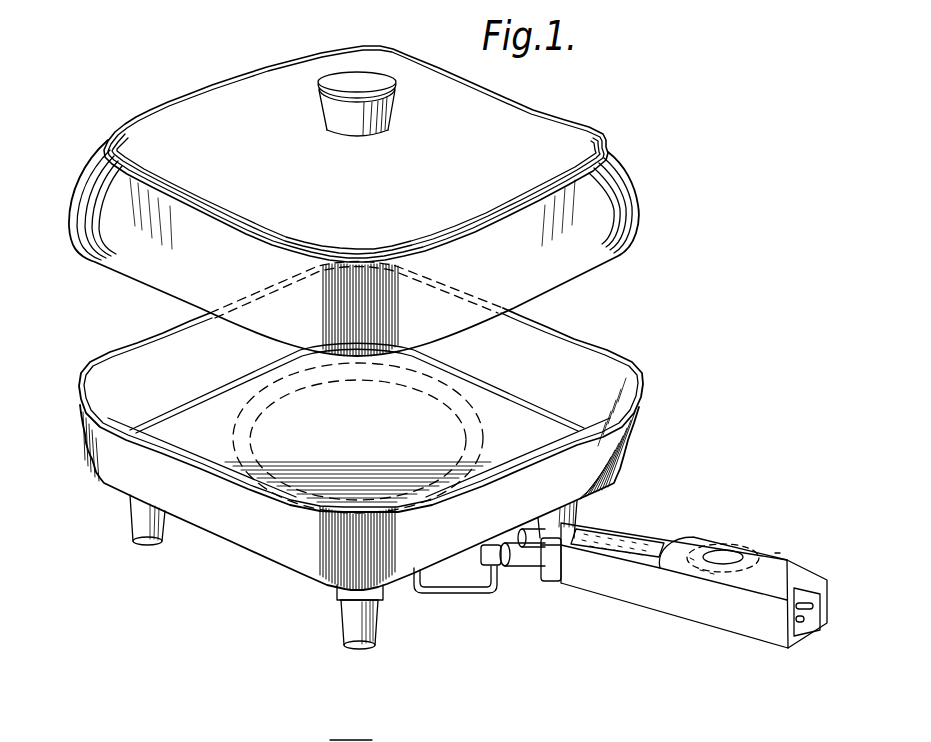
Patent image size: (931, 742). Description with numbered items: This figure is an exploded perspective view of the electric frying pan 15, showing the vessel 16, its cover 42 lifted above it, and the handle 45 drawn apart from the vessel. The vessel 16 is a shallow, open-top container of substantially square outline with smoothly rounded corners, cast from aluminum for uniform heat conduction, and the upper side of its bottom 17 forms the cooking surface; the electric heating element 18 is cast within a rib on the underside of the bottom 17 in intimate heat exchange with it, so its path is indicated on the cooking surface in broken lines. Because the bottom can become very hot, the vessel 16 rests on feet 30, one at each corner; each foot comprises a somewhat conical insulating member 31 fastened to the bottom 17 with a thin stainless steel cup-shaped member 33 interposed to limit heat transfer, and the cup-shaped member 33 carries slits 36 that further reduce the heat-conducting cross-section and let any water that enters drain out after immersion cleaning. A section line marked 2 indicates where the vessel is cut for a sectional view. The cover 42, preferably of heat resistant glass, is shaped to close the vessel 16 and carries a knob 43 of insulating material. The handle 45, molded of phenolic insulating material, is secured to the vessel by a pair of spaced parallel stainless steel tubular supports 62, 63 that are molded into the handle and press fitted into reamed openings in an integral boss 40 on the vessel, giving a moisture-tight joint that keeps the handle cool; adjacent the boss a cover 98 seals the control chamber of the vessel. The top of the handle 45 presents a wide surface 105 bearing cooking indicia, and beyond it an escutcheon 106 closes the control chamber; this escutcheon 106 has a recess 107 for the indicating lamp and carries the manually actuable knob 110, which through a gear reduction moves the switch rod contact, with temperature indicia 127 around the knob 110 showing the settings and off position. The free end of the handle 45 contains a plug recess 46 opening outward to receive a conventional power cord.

The section line 2- 2 is at (70, 390).
The electric frying pan 15 is at (210, 590).
The vessel 16 is at (573, 341).
The bottom 17 is at (350, 424).
The electric heating element 18 is at (235, 433).
The feet 30 is at (130, 530).
The insulating member 31 is at (371, 638).
The cup-shaped member 33 is at (370, 597).
The slits 36 is at (368, 594).
The boss 40 is at (505, 566).
The cover 42 is at (560, 127).
The knob 43 is at (372, 82).
The handle 45 is at (685, 592).
The plug recess 46 is at (804, 626).
The support 62 is at (542, 531).
The support 63 is at (510, 560).
The cover 98 is at (450, 592).
The surface 105 is at (650, 540).
The escutcheon 106 is at (758, 557).
The recess 107 is at (780, 554).
The knob 110 is at (727, 553).
The indicia 127 is at (697, 567).